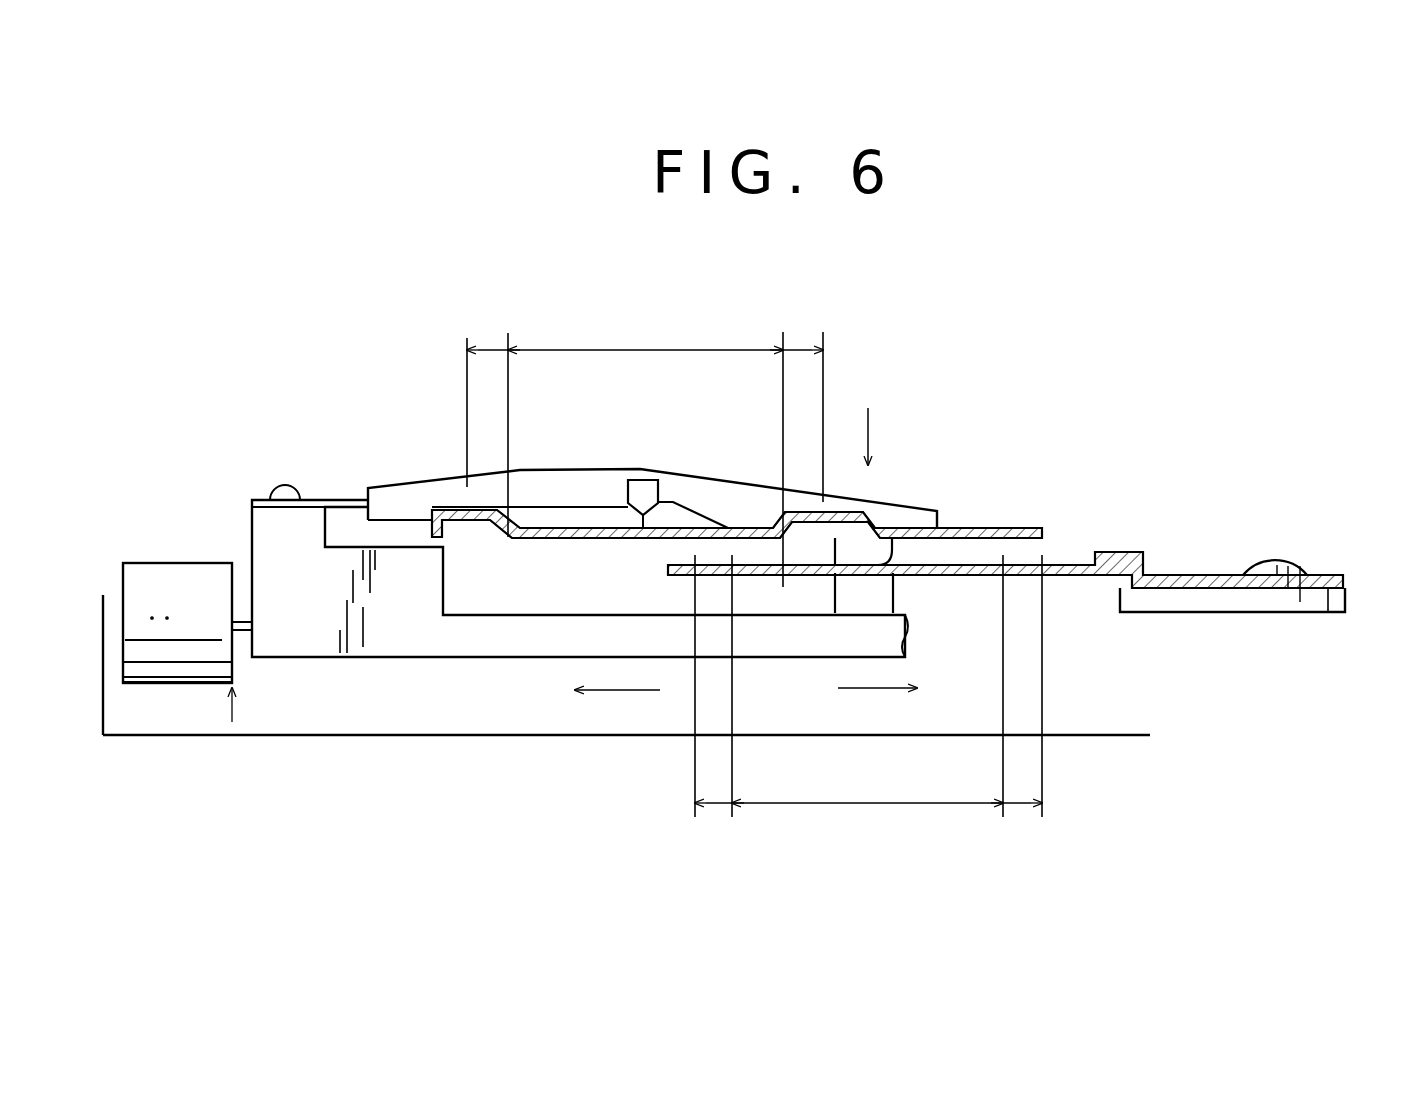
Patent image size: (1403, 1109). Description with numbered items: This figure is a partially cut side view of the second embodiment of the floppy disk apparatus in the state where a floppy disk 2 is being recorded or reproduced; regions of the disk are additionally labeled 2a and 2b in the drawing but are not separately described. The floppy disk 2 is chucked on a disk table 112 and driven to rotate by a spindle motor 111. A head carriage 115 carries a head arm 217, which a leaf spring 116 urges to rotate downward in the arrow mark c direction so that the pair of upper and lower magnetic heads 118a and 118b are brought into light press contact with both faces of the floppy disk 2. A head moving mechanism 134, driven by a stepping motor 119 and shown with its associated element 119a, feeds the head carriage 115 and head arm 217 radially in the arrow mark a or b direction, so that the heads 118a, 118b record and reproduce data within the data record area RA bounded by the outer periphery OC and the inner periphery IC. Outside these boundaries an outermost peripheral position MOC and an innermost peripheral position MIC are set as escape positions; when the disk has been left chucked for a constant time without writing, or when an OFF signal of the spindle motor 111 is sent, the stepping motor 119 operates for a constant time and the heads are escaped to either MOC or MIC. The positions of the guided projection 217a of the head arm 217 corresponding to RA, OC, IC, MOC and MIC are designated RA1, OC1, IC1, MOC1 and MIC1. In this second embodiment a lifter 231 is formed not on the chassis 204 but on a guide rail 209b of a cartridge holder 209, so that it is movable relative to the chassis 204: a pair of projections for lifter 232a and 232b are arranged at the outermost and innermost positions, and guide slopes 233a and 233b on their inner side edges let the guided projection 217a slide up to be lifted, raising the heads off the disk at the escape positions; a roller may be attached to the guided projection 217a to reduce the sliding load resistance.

The floppy disk 2 is at (973, 565).
The medium surface portion 2a is at (1192, 573).
The medium portion near hub 2b is at (1285, 565).
The spindle motor 111 is at (1268, 582).
The disk table 112 is at (1187, 605).
The head carriage 115 is at (678, 622).
The leaf spring 116 is at (337, 500).
The upper magnetic head 118a is at (882, 543).
The lower magnetic head 118b is at (880, 600).
The stepping motor 119 is at (162, 567).
The drive shaft 119a is at (243, 622).
The head moving mechanism 134 is at (214, 742).
The chassis 204 is at (300, 738).
The cartridge holder 209 is at (612, 528).
The guide rail 209b is at (553, 540).
The head arm 217 is at (555, 478).
The guided projection 217a is at (650, 545).
The lifter 231 is at (667, 687).
The projection for lifter 232a is at (457, 617).
The projection for lifter 232b is at (928, 721).
The guide slope 233a is at (505, 540).
The guide slope 233b is at (773, 545).
The guided projection position corresponding to data record area RA1 is at (652, 348).
The guided projection position corresponding to outermost peripheral position MOC1 is at (467, 378).
The guided projection position corresponding to outer periphery OC1 is at (508, 388).
The guided projection position corresponding to inner periphery IC1 is at (783, 383).
The guided projection position corresponding to innermost peripheral position MIC1 is at (823, 373).
The data record area RA is at (870, 803).
The outermost peripheral position MOC is at (693, 760).
The outer periphery OC is at (732, 778).
The inner periphery IC is at (1003, 768).
The innermost peripheral position MIC is at (1043, 760).
The arrow mark a direction a is at (617, 692).
The arrow mark b direction b is at (892, 690).
The arrow mark c direction c is at (870, 427).